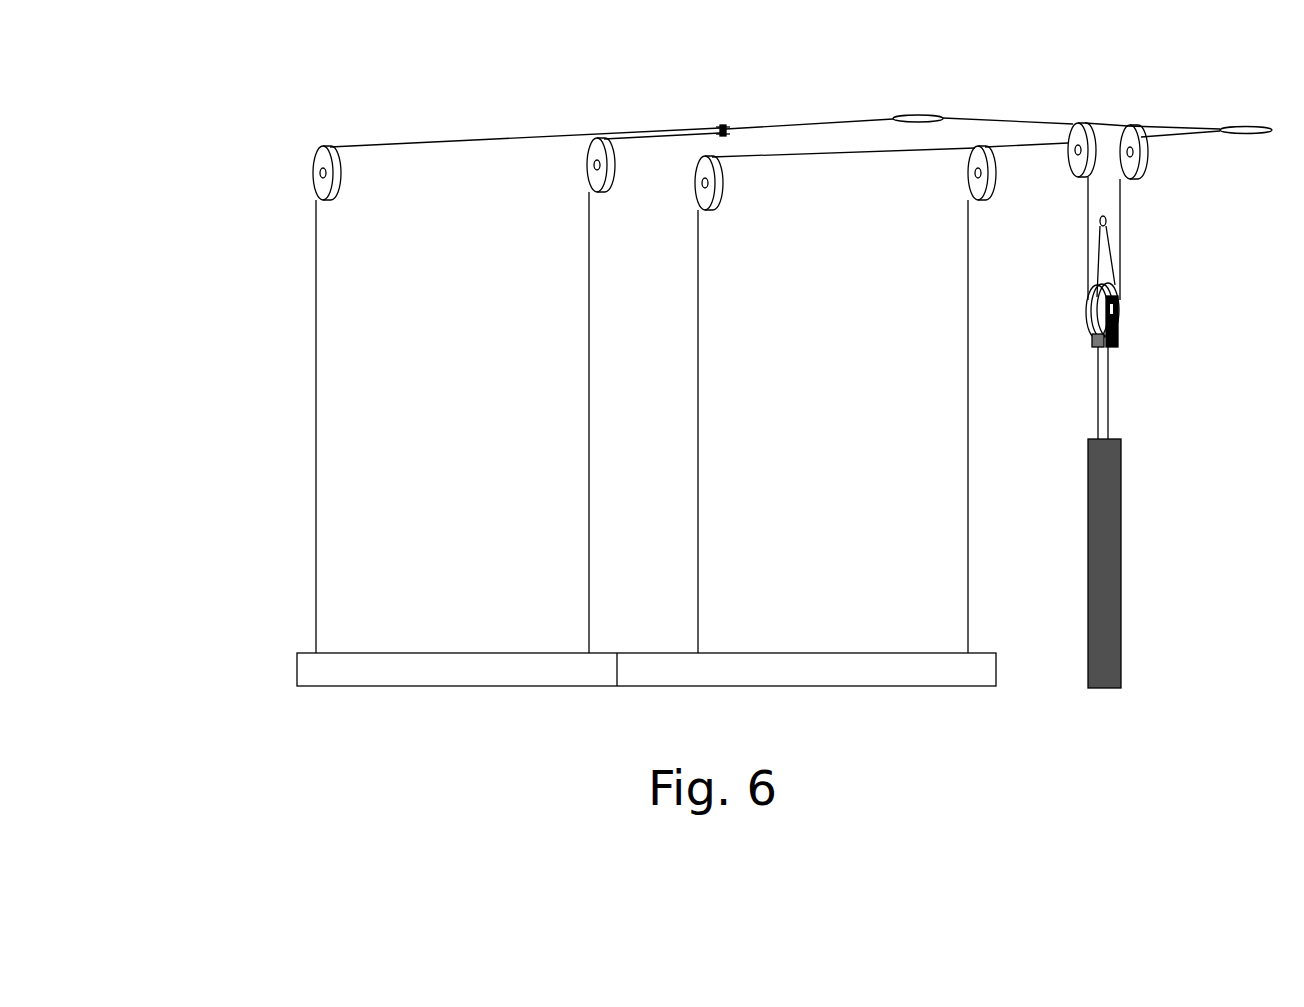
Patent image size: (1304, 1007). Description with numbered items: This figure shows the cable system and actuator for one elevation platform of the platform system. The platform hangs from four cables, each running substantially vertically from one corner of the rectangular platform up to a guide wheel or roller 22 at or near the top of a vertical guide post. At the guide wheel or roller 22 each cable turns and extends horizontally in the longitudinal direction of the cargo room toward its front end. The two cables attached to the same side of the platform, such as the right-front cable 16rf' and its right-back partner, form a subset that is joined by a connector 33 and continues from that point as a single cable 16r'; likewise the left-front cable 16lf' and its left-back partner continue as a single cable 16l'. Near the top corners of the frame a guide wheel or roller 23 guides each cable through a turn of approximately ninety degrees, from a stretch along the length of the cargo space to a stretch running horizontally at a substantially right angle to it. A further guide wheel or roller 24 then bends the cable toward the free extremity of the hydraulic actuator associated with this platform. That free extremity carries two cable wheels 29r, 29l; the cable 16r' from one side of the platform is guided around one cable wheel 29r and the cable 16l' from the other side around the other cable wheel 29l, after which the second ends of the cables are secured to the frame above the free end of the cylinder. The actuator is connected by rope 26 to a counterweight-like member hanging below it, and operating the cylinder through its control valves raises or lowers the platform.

The cable 16rf' is at (541, 422).
The cable 16lf' is at (921, 426).
The cable 16r' is at (701, 96).
The cable 16l' is at (970, 103).
The connector 33 is at (721, 124).
The guide wheel or roller 22 is at (312, 152).
The guide wheel or roller 23 is at (922, 115).
The further guide wheel or roller 24 is at (1143, 157).
The cable wheel 29r is at (1087, 299).
The cable wheel 29l is at (1120, 300).
The rope 26 is at (1107, 395).